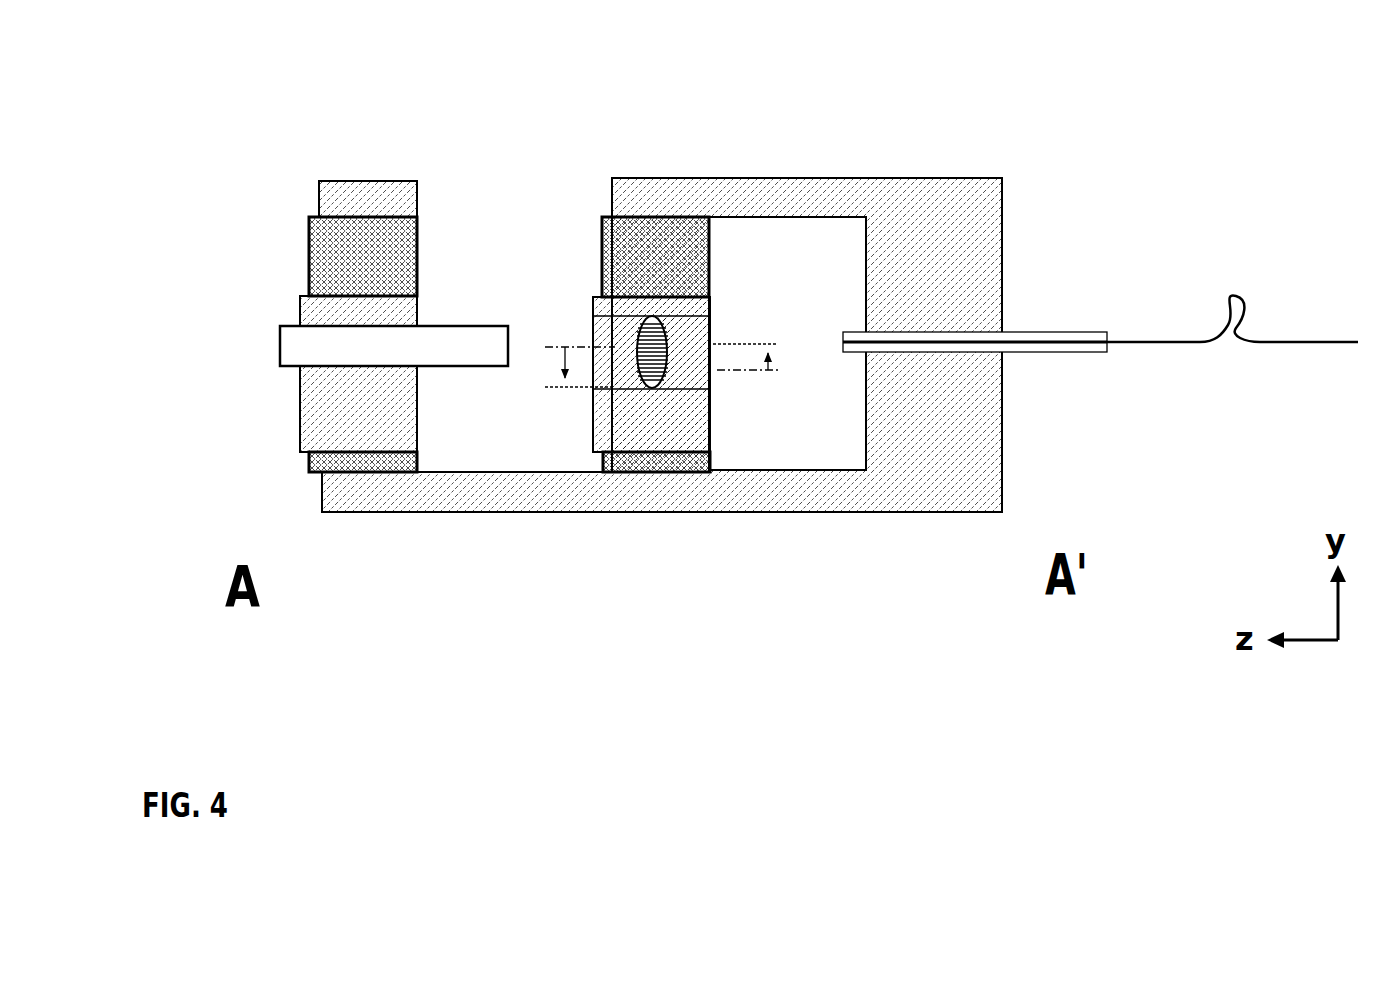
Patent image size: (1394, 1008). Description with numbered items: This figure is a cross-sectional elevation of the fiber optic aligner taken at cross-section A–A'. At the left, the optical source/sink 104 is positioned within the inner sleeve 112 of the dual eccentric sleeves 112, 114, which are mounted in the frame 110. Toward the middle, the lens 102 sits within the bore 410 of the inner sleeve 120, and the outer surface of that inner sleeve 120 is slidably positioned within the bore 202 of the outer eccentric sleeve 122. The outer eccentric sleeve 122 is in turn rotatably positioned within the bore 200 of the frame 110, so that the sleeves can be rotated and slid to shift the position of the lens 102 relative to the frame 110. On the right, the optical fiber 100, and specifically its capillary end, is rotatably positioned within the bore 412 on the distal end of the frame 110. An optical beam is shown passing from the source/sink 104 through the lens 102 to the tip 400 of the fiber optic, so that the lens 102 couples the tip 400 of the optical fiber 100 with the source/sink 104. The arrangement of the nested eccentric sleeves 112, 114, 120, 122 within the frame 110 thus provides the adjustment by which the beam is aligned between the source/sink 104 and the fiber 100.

The optical fiber 100 is at (1262, 339).
The lens 102 is at (667, 365).
The optical source/sink 104 is at (278, 348).
The frame 110 is at (340, 196).
The inner sleeve 112 is at (313, 313).
The dual eccentric sleeve (outer sleeve) 114 is at (309, 262).
The inner sleeve 120 is at (594, 311).
The outer eccentric sleeve 122 is at (602, 262).
The bore of the frame 200 is at (777, 225).
The bore of the outer eccentric sleeve 202 is at (757, 300).
The tip of the fiber optic 400 is at (840, 328).
The bore of the inner sleeve 410 is at (708, 320).
The bore on the distal end of the frame 412 is at (996, 342).